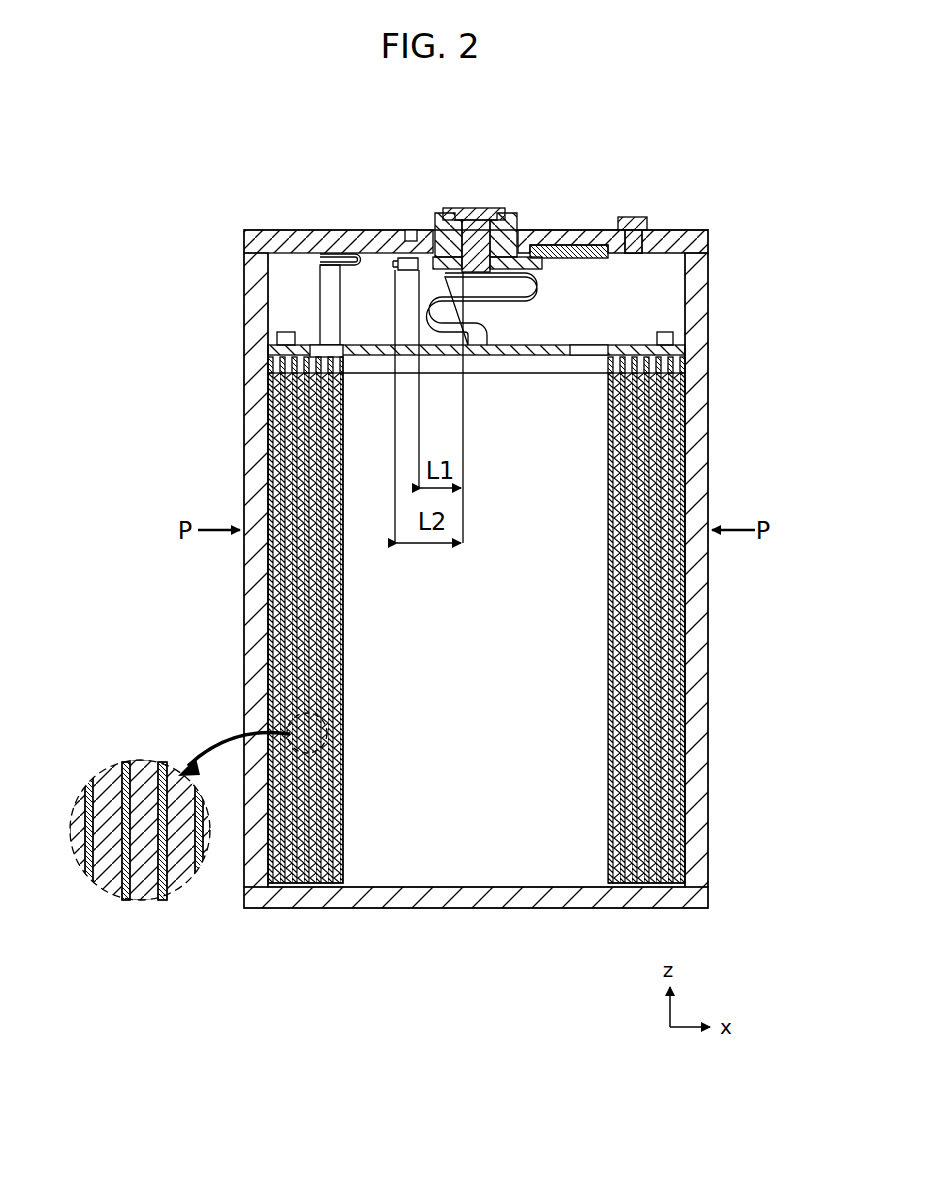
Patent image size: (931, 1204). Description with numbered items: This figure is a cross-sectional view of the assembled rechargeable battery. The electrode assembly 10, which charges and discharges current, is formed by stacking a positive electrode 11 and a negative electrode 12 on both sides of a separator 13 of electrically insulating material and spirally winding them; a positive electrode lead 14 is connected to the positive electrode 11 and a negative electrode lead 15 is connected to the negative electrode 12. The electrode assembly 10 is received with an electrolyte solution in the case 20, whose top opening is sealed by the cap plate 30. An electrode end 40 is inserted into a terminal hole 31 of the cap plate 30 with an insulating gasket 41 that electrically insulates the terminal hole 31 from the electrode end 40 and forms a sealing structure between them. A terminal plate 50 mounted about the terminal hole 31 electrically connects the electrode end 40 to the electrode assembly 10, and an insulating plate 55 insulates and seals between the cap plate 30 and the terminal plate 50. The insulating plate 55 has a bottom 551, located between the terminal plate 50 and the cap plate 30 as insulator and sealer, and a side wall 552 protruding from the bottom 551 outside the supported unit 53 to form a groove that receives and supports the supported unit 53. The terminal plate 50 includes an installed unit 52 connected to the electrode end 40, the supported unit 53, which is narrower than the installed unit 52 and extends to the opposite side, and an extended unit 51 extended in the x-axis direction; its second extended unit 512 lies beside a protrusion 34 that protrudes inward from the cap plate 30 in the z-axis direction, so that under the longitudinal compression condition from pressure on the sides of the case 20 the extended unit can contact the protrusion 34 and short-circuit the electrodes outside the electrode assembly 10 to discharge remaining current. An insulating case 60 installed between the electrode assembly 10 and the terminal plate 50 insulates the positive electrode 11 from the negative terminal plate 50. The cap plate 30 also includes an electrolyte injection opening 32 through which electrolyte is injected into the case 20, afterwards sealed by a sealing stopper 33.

The electrode assembly 10 is at (262, 620).
The positive electrode 11 is at (143, 886).
The negative electrode 12 is at (182, 876).
The separator 13 is at (163, 762).
The positive electrode lead 14 is at (328, 300).
The negative electrode lead 15 is at (441, 306).
The case 20 is at (711, 636).
The cap plate 30 is at (476, 234).
The terminal hole 31 is at (461, 222).
The electrolyte injection opening 32 is at (287, 240).
The sealing stopper 33 is at (633, 224).
The protrusion 34 is at (414, 271).
The electrode end 40 is at (451, 204).
The insulating gasket 41 is at (449, 213).
The terminal plate 50 is at (511, 273).
The extended unit 51 is at (447, 263).
The second extended unit 512 is at (386, 217).
The installed unit 52 is at (444, 324).
The supported unit 53 is at (560, 259).
The insulating plate 55 is at (552, 232).
The bottom 551 is at (505, 255).
The side wall 552 is at (600, 259).
The insulating case 60 is at (685, 349).